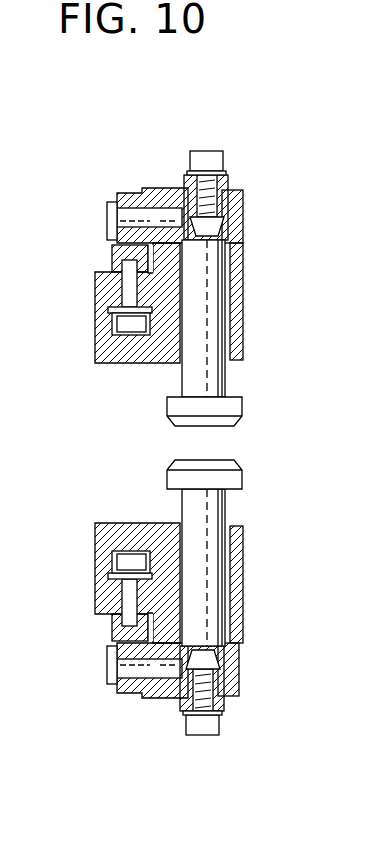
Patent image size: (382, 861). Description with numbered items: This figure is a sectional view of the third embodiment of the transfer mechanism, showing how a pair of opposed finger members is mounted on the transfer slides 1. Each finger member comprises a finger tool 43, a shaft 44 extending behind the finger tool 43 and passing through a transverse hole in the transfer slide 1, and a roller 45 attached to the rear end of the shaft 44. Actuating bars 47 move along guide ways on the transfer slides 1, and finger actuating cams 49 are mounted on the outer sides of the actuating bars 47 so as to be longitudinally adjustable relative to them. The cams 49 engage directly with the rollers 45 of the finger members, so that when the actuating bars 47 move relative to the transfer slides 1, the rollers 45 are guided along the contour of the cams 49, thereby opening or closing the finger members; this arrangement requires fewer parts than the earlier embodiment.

The transfer slide 1 is at (107, 345).
The finger tool 43 is at (233, 408).
The shaft 44 is at (217, 378).
The roller 45 is at (133, 195).
The actuating bar 47 is at (107, 295).
The finger actuating cam 49 is at (118, 251).